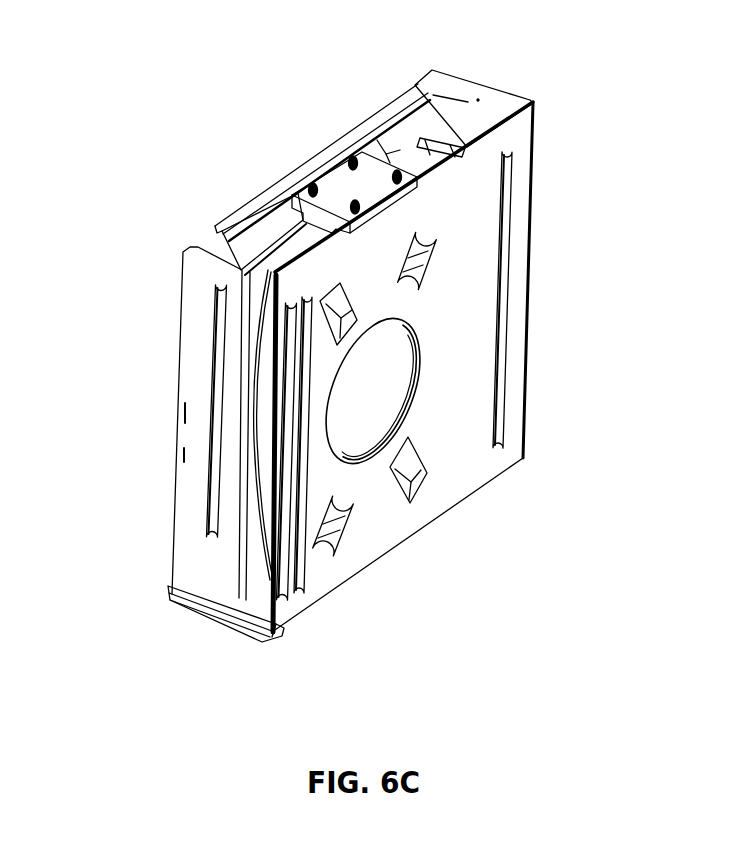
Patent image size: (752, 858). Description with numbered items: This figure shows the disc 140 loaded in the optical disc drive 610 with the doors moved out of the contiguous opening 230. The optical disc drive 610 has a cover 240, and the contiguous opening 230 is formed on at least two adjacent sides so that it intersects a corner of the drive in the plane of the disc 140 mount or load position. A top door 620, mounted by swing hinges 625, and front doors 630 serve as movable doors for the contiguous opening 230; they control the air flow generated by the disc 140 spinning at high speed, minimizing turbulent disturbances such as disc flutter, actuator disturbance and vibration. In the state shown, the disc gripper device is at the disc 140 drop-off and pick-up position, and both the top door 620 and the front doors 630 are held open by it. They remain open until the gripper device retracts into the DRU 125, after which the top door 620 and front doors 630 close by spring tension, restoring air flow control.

The optical disc drive 610 is at (98, 65).
The top door 620 is at (437, 105).
The swing hinges 625 is at (403, 98).
The DRU 125 is at (363, 187).
The cover 240 is at (463, 370).
The front doors 630 is at (240, 352).
The disc 140 is at (253, 447).
The contiguous opening 230 is at (250, 560).